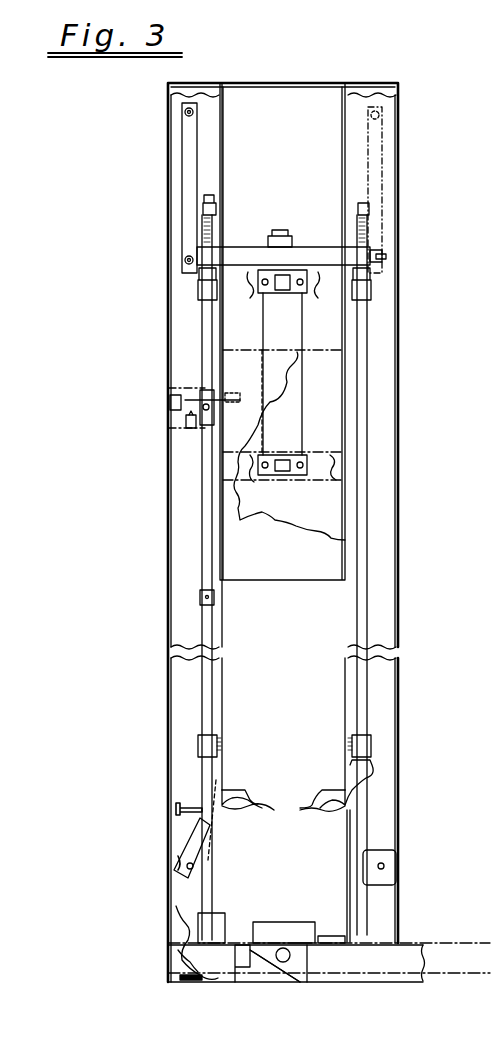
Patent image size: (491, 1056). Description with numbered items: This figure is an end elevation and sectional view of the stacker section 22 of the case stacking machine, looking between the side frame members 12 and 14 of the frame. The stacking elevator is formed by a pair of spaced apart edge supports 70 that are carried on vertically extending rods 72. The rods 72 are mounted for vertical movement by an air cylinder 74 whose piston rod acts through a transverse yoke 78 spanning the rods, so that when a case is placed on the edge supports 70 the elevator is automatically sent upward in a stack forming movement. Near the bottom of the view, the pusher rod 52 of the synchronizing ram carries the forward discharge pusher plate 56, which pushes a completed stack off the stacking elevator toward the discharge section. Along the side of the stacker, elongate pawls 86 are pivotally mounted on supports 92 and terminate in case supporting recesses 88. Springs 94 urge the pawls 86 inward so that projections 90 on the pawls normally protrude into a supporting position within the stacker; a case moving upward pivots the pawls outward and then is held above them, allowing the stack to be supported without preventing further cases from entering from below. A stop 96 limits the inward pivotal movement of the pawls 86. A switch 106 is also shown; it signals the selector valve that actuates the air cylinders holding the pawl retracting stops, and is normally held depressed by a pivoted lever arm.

The stacker section 22 is at (412, 182).
The side frame member 12 is at (176, 357).
The vertically extending rods 72 is at (358, 478).
The transverse yoke 78 is at (318, 250).
The air cylinder 74 is at (292, 404).
The switch 106 is at (172, 402).
The case supporting recesses 88 is at (225, 797).
The projections 90 is at (283, 810).
The springs 94 is at (186, 805).
The elongate pawls 86 is at (188, 848).
The stop 96 is at (178, 862).
The supports 92 is at (190, 866).
The side frame member 14 is at (178, 932).
The edge supports 70 is at (214, 928).
The discharge pusher plate 56 is at (284, 928).
The pusher rod 52 is at (284, 963).